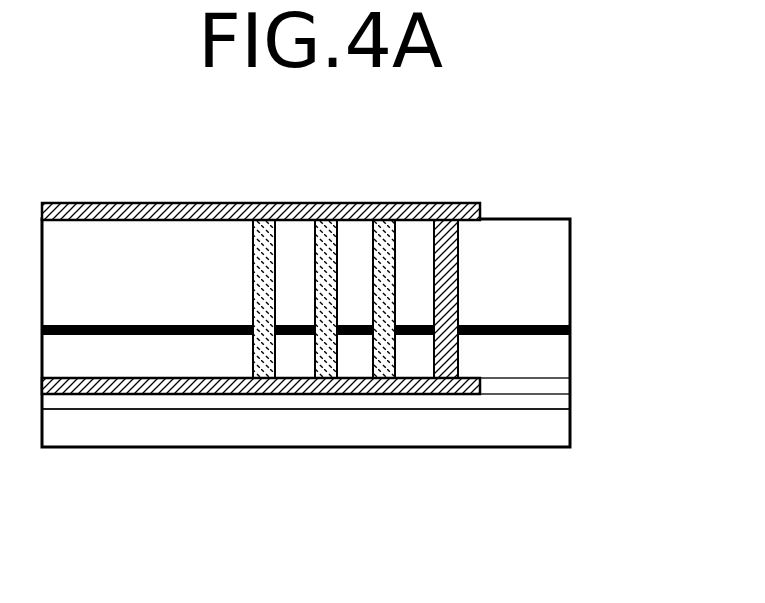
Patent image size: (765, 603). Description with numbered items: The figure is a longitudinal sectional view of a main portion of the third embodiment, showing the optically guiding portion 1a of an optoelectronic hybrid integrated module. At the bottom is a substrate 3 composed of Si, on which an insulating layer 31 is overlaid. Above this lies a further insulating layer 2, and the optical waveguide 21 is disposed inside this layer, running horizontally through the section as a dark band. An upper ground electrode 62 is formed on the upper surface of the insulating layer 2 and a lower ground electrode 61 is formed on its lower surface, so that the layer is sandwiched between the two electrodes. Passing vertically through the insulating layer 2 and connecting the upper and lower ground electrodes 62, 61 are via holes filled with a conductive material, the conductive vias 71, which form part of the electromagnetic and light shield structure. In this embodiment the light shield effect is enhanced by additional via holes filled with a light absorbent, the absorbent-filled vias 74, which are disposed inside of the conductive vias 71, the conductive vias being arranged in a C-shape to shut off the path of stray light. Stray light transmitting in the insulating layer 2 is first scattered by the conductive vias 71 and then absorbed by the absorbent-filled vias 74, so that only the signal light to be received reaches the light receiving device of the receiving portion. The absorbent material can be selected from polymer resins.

The optically guiding portion 1a is at (320, 490).
The insulating layer 2 is at (525, 238).
The substrate 3 is at (162, 428).
The insulating layer 31 is at (80, 402).
The optical waveguide 21 is at (547, 323).
The upper ground electrode 62 is at (205, 203).
The lower ground electrode 61 is at (432, 394).
The conductive vias 71 is at (458, 348).
The absorbent-filled vias 74 is at (415, 220).